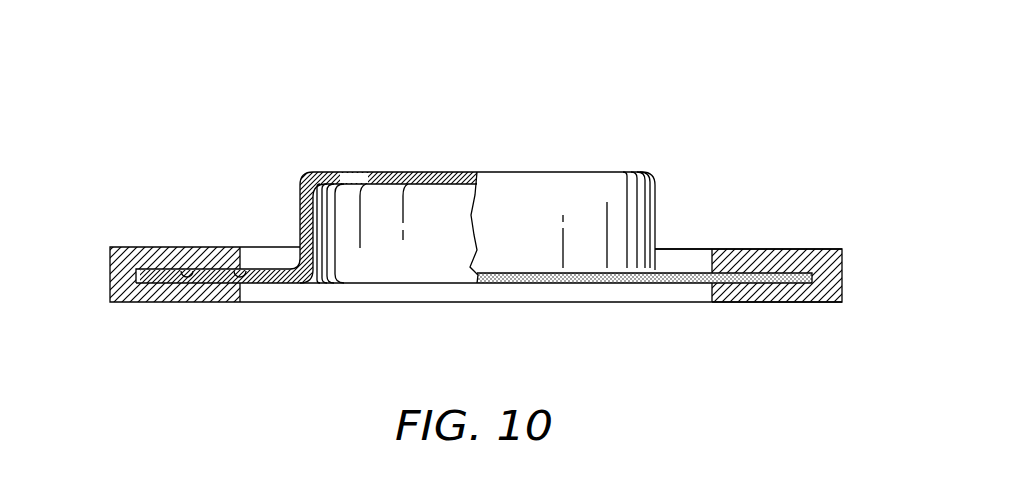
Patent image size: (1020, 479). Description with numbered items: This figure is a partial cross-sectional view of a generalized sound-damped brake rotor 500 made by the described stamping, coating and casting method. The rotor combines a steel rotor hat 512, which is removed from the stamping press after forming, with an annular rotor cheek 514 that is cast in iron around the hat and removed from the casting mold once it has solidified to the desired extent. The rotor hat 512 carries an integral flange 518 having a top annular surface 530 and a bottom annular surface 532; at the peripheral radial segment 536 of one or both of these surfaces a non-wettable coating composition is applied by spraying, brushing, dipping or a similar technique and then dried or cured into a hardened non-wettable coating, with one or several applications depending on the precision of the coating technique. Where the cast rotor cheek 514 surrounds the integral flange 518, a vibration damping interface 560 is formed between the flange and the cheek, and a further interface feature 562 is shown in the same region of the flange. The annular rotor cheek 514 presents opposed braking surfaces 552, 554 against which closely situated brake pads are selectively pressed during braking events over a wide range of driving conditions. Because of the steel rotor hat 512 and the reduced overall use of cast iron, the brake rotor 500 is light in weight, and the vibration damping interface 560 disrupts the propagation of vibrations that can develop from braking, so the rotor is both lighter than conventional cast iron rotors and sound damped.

The brake rotor 500 is at (637, 89).
The rotor hat 512 is at (650, 168).
The annular rotor cheek 514 is at (784, 246).
The integral flange 518 is at (675, 248).
The top annular surface 530 is at (693, 273).
The bottom annular surface 532 is at (680, 285).
The peripheral radial segment 536 is at (171, 264).
The braking surface 552 is at (830, 250).
The braking surface 554 is at (793, 303).
The vibration damping interface 560 is at (197, 267).
The bond feature 562 is at (247, 267).